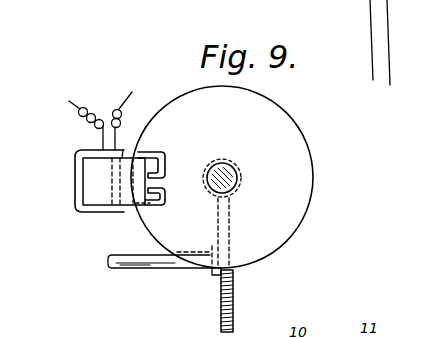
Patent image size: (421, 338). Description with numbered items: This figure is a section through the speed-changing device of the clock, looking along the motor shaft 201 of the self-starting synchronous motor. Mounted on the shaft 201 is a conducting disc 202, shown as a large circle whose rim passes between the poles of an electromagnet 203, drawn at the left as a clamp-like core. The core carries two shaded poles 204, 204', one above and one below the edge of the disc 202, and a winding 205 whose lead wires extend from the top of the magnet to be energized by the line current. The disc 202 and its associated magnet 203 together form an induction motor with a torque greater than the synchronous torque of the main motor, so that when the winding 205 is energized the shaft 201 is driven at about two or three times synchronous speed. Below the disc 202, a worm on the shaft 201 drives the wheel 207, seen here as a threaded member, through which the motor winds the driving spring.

The motor shaft 201 is at (235, 171).
The conducting disc 202 is at (295, 122).
The electromagnet 203 is at (95, 178).
The shaded pole 204 is at (166, 153).
The shaded pole 204' is at (168, 207).
The winding 205 is at (85, 209).
The wheel 207 is at (233, 313).